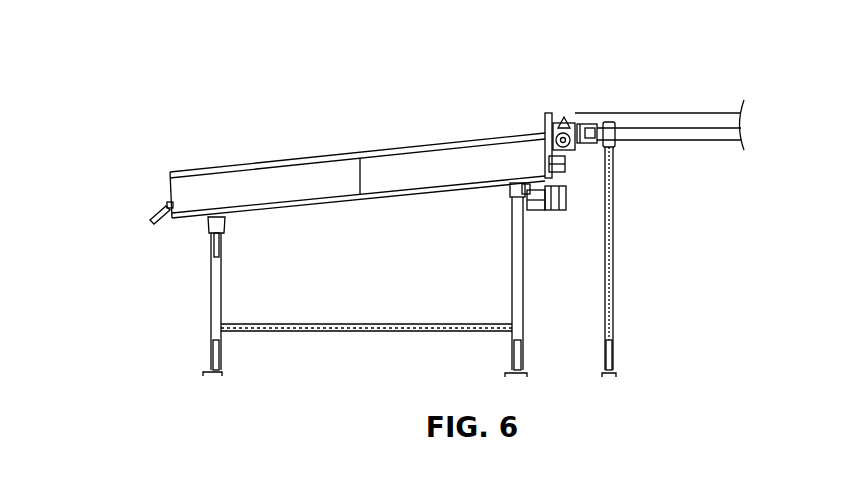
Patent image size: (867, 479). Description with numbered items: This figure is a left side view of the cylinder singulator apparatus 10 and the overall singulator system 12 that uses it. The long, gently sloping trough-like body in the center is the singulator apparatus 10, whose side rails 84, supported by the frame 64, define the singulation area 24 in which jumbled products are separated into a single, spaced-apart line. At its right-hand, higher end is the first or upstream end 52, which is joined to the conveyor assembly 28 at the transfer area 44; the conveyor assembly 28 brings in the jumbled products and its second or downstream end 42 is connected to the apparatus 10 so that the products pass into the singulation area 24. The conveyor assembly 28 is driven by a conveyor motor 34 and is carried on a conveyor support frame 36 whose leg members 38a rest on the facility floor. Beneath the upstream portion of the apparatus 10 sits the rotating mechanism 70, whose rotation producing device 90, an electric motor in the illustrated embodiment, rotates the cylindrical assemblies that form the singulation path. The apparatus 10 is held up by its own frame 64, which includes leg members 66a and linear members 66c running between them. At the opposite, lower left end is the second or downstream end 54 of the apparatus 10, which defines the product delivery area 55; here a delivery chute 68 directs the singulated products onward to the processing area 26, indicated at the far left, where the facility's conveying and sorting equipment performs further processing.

The singulator apparatus 10 is at (321, 155).
The singulator system 12 is at (450, 138).
The singulation area 24 is at (420, 145).
The processing area 26 is at (65, 168).
The conveyor assembly 28 is at (683, 112).
The conveyor motor 34 is at (577, 130).
The conveyor support frame 36 is at (612, 319).
The leg members 38a is at (607, 250).
The downstream end 42 is at (547, 110).
The transfer area 44 is at (520, 128).
The upstream end 52 is at (535, 119).
The downstream end 54 is at (170, 162).
The product delivery area 55 is at (142, 196).
The frame 64 is at (253, 331).
The leg members 66a is at (212, 285).
The linear members 66c is at (368, 328).
The delivery chute 68 is at (157, 224).
The rotating mechanism 70 is at (577, 197).
The side rails 84 is at (398, 185).
The rotation producing device 90 is at (548, 207).